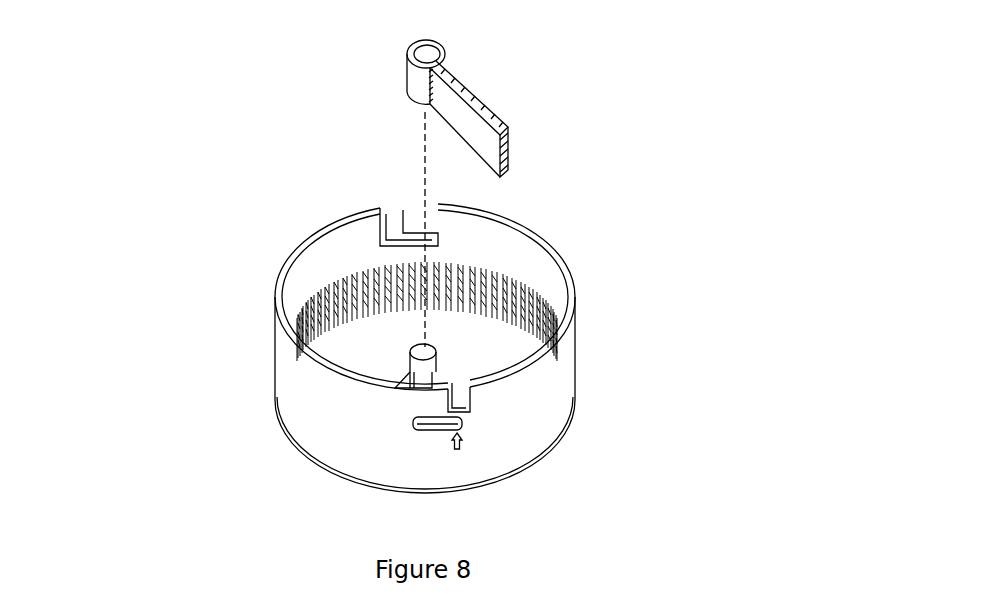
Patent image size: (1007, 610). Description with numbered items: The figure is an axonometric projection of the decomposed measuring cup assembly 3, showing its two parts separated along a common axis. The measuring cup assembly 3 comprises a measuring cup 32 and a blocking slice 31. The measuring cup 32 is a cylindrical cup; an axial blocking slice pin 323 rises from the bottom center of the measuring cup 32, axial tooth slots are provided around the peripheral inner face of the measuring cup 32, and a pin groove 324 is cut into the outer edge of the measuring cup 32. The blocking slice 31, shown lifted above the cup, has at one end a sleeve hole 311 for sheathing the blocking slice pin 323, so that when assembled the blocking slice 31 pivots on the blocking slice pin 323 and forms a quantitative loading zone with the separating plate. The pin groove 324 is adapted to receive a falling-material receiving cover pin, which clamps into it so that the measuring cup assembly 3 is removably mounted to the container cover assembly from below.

The measuring cup assembly 3 is at (160, 95).
The blocking slice 31 is at (380, 80).
The sleeve hole 311 is at (468, 50).
The measuring cup 32 is at (258, 357).
The blocking slice pin 323 is at (466, 341).
The pin groove 324 is at (486, 424).